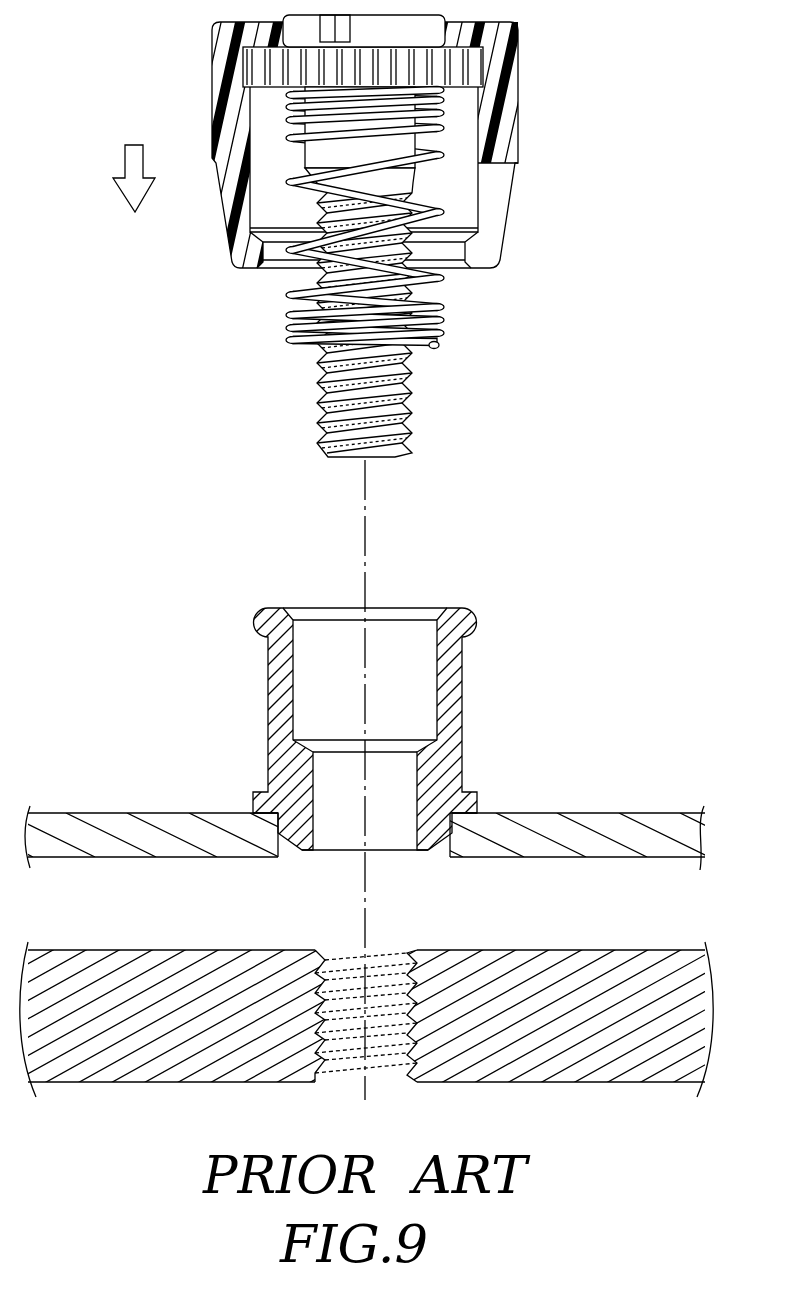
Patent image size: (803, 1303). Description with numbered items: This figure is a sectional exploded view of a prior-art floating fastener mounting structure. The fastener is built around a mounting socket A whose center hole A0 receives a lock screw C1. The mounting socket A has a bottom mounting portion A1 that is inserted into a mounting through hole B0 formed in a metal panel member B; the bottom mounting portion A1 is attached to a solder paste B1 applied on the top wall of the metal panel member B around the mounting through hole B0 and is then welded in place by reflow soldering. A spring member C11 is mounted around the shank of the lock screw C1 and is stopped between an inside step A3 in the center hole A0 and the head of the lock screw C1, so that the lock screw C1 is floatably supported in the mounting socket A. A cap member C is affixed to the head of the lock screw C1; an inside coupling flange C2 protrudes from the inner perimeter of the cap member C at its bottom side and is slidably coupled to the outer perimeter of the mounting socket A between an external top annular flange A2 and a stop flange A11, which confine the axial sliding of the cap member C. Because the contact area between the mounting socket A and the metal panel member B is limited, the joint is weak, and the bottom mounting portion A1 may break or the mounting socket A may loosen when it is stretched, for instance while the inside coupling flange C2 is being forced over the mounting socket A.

The cap member C is at (222, 62).
The lock screw C1 is at (412, 147).
The inside coupling flange C2 is at (240, 262).
The spring member C11 is at (437, 307).
The mounting socket A is at (453, 680).
The center hole A0 is at (417, 628).
The bottom mounting portion A1 is at (426, 858).
The external top annular flange A2 is at (262, 617).
The inside step A3 is at (300, 742).
The stop flange A11 is at (262, 797).
The metal panel member B is at (616, 828).
The mounting through hole B0 is at (288, 857).
The solder paste B1 is at (462, 808).